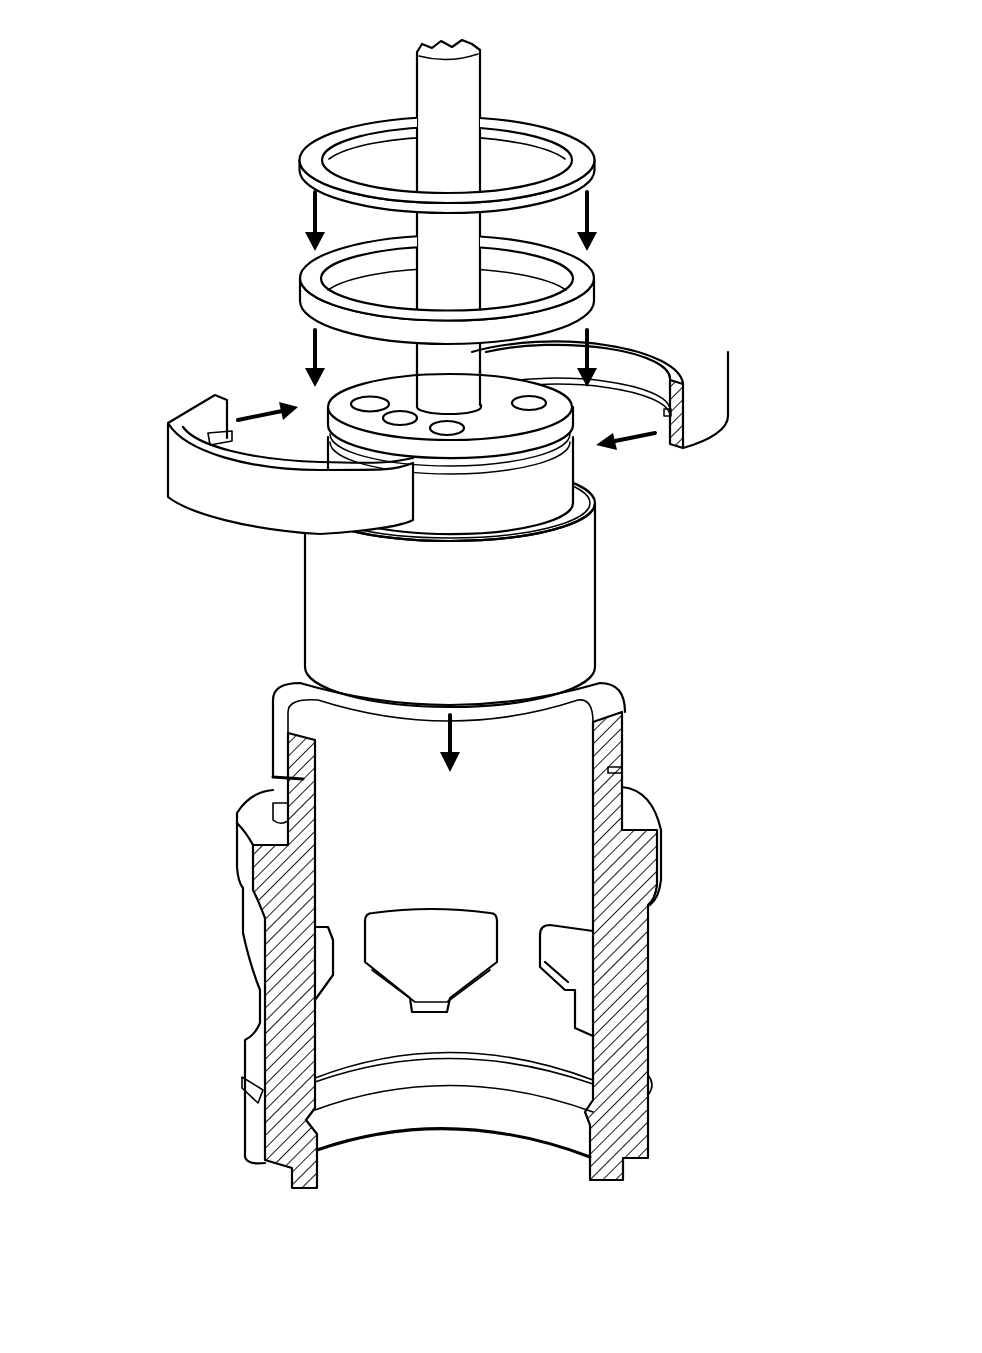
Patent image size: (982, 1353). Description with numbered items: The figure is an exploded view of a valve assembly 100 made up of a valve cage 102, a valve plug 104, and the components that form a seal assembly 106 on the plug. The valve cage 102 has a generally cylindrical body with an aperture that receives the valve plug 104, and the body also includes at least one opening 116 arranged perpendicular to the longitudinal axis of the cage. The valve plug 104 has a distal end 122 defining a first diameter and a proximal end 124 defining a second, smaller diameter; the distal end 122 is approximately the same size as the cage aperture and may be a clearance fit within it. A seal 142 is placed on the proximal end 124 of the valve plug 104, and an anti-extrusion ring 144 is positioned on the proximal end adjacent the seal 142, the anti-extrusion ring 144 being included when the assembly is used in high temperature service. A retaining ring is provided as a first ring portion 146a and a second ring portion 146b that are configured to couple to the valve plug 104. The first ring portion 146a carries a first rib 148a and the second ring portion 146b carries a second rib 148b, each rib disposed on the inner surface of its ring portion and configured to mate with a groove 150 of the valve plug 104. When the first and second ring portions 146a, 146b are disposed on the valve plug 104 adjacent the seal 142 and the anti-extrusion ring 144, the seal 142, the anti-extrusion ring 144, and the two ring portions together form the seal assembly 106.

The valve assembly 100 is at (127, 145).
The valve cage 102 is at (287, 745).
The valve plug 104 is at (555, 563).
The seal assembly 106 is at (723, 200).
The opening 116 is at (229, 998).
The distal end 122 is at (555, 623).
The proximal end 124 is at (555, 493).
The seal 142 is at (595, 298).
The anti-extrusion ring 144 is at (594, 170).
The first ring portion 146a is at (705, 405).
The second ring portion 146b is at (190, 470).
The first rib 148a is at (690, 356).
The second rib 148b is at (210, 438).
The groove 150 is at (326, 433).